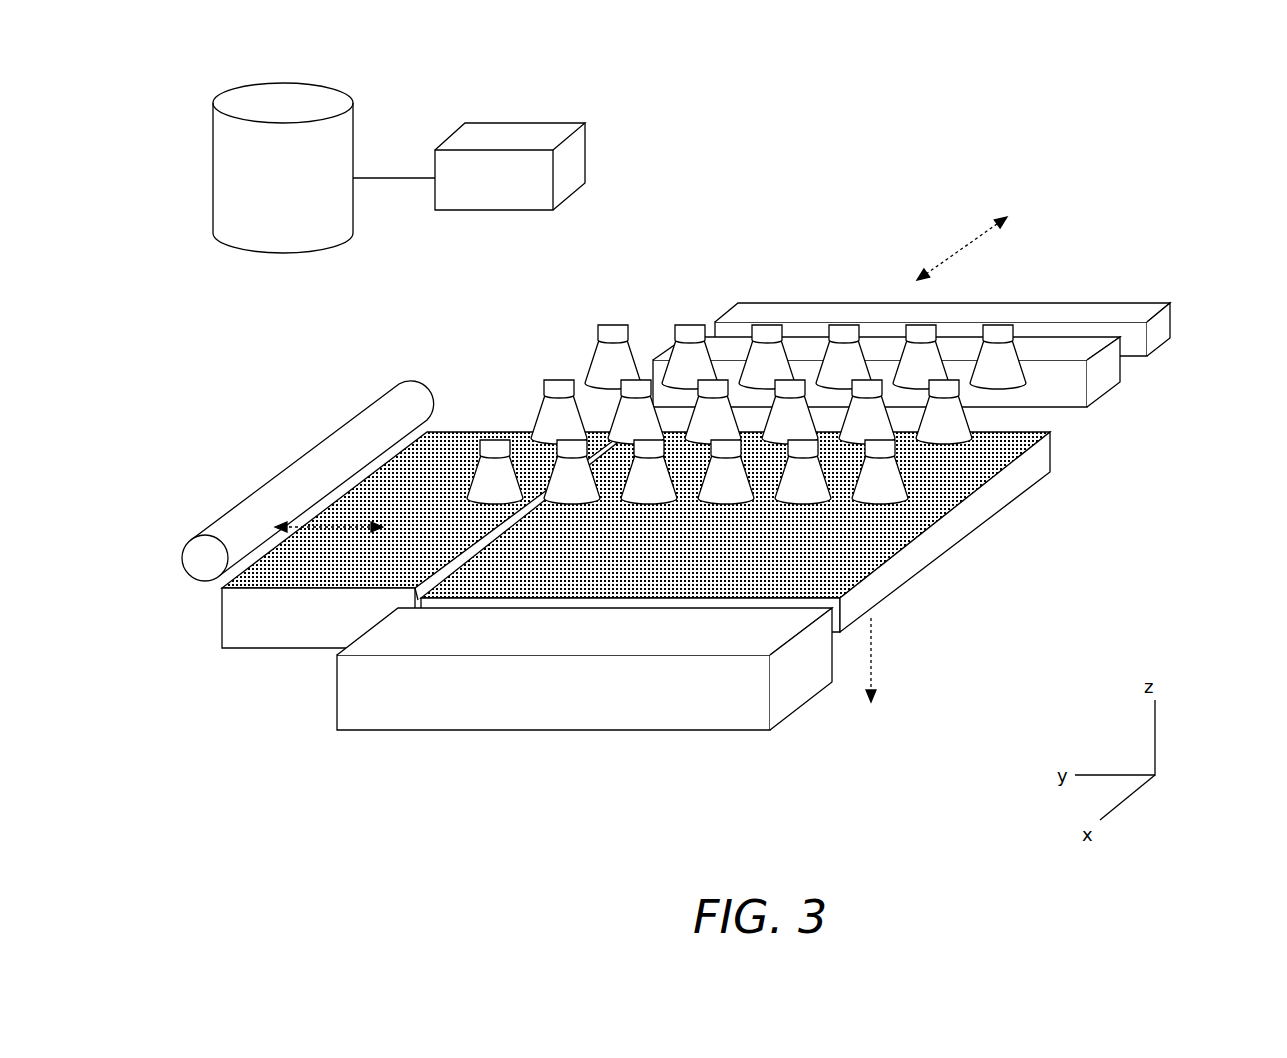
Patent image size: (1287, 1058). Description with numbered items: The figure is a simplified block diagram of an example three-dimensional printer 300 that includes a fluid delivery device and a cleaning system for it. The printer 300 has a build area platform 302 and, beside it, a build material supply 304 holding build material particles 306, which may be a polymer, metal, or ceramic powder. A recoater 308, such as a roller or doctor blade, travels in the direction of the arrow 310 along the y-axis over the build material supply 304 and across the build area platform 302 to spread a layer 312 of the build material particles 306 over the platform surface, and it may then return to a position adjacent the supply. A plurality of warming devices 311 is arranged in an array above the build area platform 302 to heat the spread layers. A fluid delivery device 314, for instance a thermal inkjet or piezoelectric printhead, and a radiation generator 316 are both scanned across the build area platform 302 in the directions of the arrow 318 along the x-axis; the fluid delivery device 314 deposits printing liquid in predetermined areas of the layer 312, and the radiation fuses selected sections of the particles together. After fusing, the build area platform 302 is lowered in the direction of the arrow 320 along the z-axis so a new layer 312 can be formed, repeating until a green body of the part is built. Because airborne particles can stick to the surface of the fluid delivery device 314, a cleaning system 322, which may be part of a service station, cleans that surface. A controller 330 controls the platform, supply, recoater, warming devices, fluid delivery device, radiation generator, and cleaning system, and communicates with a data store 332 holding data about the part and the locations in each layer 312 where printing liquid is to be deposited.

The three-dimensional (3D) printer 300 is at (300, 36).
The build area platform 302 is at (735, 532).
The build material supply 304 is at (390, 571).
The build material particles 306 is at (260, 590).
The recoater 308 is at (322, 441).
The arrow 310 is at (290, 525).
The warming devices 311 is at (621, 323).
The layer 312 is at (943, 516).
The fluid delivery device 314 is at (1105, 390).
The radiation generator 316 is at (1158, 346).
The arrow 318 is at (958, 250).
The arrow 320 is at (873, 662).
The cleaning system 322 is at (555, 731).
The controller 330 is at (520, 120).
The data store 332 is at (305, 194).